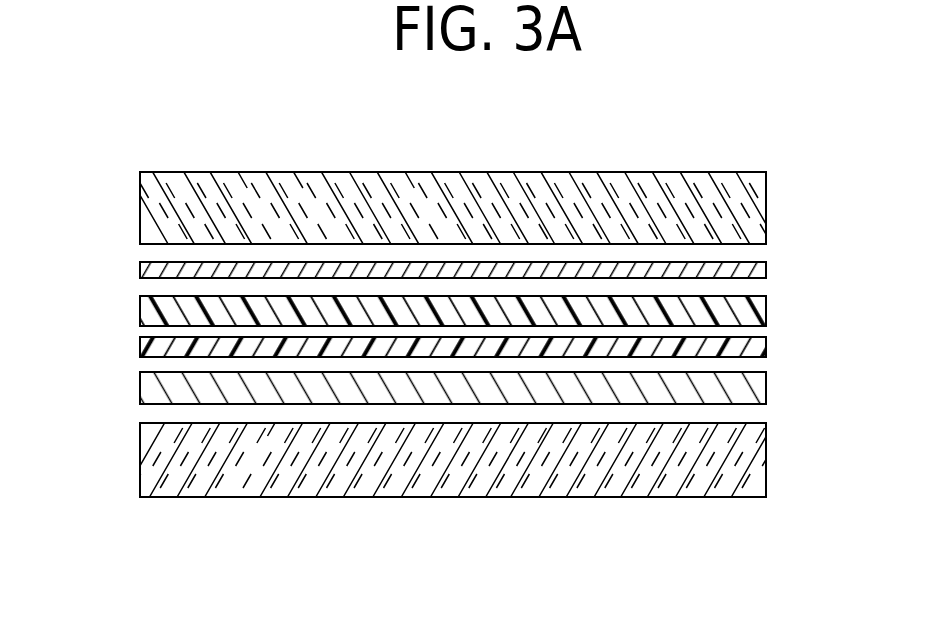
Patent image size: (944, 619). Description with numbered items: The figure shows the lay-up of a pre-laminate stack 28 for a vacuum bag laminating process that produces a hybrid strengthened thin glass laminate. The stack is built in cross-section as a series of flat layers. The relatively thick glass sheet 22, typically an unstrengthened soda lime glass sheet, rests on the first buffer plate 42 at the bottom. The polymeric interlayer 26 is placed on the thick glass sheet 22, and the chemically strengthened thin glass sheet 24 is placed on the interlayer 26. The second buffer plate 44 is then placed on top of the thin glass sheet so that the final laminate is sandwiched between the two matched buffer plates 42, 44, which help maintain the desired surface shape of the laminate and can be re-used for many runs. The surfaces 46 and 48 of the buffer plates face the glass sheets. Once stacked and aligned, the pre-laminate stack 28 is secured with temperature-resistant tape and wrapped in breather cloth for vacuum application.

The pre-laminate stack 28 is at (218, 133).
The second buffer plate 44 is at (140, 205).
The inner surface of first outer layer 46 is at (731, 245).
The chemically strengthened thin glass sheet 24 is at (140, 275).
The polymeric interlayer 26 is at (782, 291).
The relatively thick glass sheet 22 is at (140, 383).
The inner surface of second outer layer 48 is at (737, 424).
The first buffer plate 42 is at (140, 460).